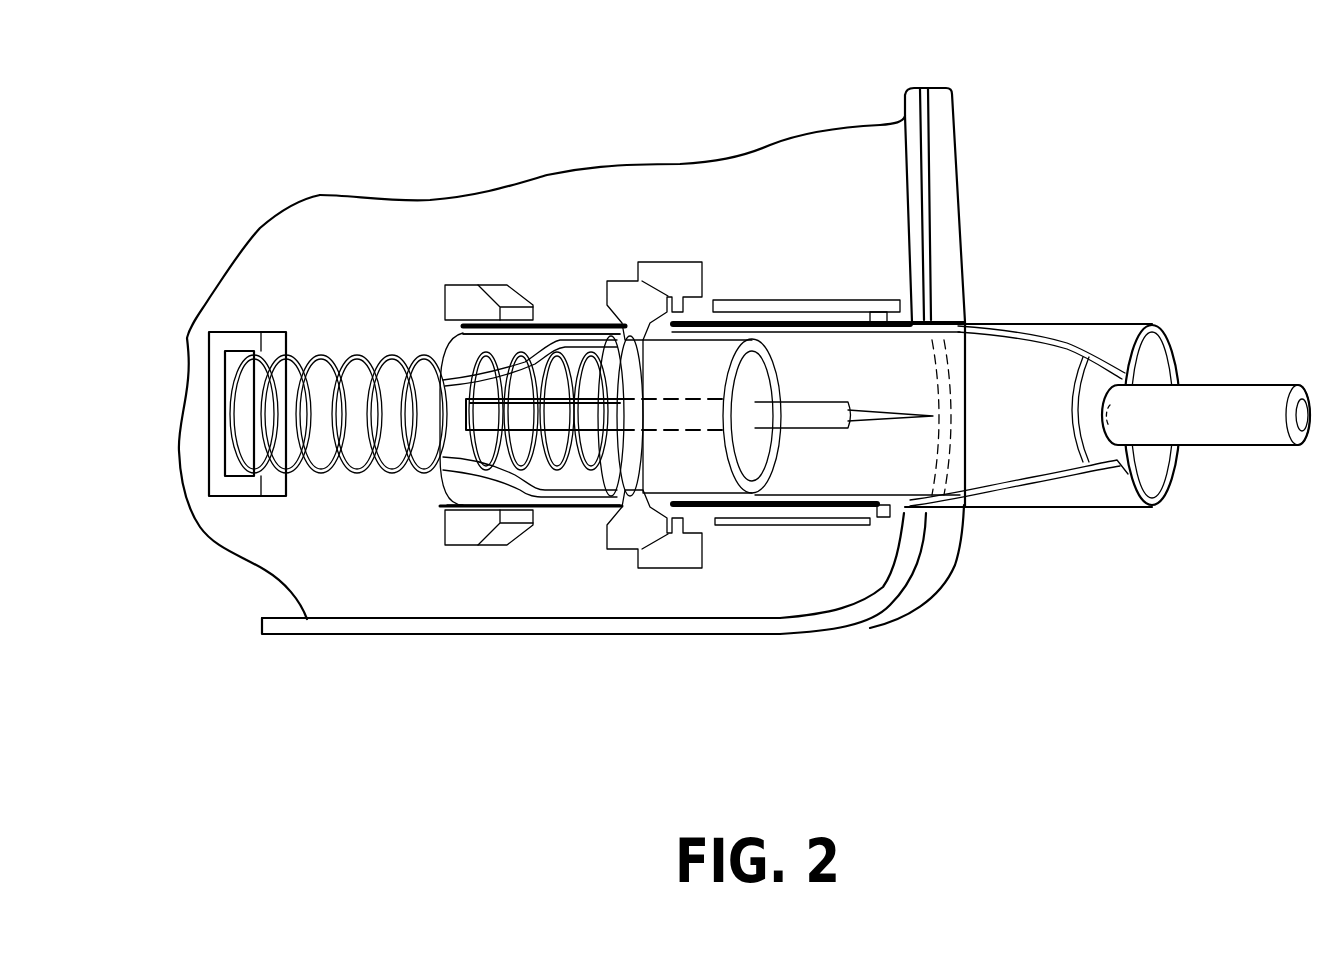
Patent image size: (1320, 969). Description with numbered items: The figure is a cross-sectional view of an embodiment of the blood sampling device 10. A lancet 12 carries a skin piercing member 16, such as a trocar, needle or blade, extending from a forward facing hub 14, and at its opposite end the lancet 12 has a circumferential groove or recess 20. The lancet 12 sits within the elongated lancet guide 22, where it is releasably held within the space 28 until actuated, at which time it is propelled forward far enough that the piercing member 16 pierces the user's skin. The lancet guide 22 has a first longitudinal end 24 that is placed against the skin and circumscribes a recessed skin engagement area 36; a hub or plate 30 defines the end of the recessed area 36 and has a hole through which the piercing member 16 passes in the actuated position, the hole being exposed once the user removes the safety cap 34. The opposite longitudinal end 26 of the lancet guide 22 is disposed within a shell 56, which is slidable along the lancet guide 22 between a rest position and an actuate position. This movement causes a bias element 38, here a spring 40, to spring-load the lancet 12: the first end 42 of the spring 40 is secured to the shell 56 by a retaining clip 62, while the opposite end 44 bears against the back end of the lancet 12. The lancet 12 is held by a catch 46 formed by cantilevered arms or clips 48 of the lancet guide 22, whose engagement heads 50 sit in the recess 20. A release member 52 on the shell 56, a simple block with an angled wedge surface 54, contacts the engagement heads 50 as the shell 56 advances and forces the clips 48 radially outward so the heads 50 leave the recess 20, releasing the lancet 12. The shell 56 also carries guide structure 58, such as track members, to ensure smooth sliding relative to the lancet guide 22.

The blood sampling device 10 is at (665, 361).
The lancet 12 is at (788, 369).
The forward facing hub 14 is at (757, 357).
The skin piercing member 16 is at (882, 415).
The circumferential groove or recess 20 is at (622, 458).
The lancet guide 22 is at (665, 361).
The first longitudinal end 24 is at (1150, 505).
The opposite longitudinal end 26 is at (440, 528).
The space 28 is at (1028, 455).
The hub or plate 30 is at (1125, 373).
The safety cap 34 is at (1220, 433).
The recessed skin engagement area 36 is at (1153, 468).
The bias element 38 is at (338, 398).
The spring 40 is at (435, 478).
The first end of the spring 42 is at (214, 442).
The opposite end of the spring 44 is at (536, 417).
The catch 46 is at (685, 387).
The cantilevered arms or clips 48 is at (690, 542).
The engagement head 50 is at (637, 293).
The release member 52 is at (448, 300).
The angled wedge surface 54 is at (507, 290).
The shell 56 is at (508, 185).
The guide structure 58 is at (783, 528).
The retaining clip 62 is at (233, 490).